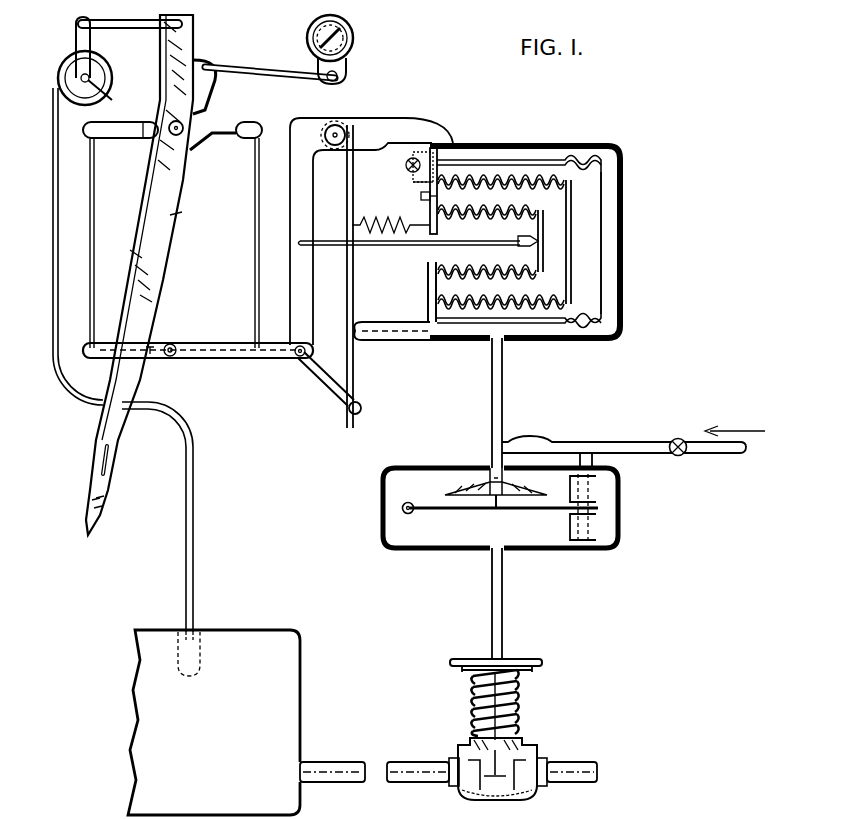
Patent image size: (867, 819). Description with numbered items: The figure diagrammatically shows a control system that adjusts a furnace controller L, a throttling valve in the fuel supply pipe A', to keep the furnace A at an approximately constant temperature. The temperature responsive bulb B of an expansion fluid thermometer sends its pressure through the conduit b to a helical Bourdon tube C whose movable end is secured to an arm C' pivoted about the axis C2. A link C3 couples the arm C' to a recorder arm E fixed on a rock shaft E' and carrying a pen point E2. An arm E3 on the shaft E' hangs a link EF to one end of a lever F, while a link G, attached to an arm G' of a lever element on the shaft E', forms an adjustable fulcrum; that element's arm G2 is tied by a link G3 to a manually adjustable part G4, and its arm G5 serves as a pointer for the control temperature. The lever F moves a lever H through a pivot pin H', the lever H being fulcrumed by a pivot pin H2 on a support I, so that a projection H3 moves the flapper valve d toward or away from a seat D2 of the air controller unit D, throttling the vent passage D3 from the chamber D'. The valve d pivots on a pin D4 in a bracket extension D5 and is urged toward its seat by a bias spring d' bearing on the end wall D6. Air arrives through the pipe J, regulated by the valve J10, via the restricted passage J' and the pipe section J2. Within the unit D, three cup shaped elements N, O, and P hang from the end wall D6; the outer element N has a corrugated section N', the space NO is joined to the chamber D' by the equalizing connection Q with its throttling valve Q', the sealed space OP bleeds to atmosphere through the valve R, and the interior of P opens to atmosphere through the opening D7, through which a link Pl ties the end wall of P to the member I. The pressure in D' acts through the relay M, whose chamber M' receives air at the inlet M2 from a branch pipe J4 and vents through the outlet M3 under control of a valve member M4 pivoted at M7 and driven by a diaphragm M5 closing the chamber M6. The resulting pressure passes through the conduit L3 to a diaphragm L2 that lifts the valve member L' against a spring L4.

The recorder arm E is at (144, 275).
The rock shaft E' is at (208, 117).
The pen point E2 is at (98, 518).
The arm E3 is at (120, 138).
The link EF is at (97, 224).
The lever F is at (155, 360).
The link G is at (246, 243).
The arm G' is at (226, 147).
The arm G2 is at (210, 80).
The link G3 is at (257, 68).
The manually adjustable part G4 is at (340, 74).
The pointer arm G5 is at (178, 216).
The pressure responsive element C is at (94, 78).
The arm C' is at (67, 47).
The axis C2 is at (109, 93).
The link C3 is at (138, 28).
The conduit b is at (193, 542).
The temperature responsive bulb B is at (193, 642).
The furnace A is at (246, 722).
The fuel supply pipe A' is at (492, 755).
The lever H is at (326, 381).
The pivot pin H' is at (198, 368).
The pivot pin H2 is at (294, 360).
The projection H3 is at (362, 408).
The support I is at (292, 316).
The flapper valve d is at (358, 276).
The bias spring d' is at (391, 216).
The control pressure regulator D is at (543, 239).
The chamber D' is at (633, 333).
The seat D2 is at (362, 323).
The vent passage D3 is at (398, 336).
The pivot pin D4 is at (337, 125).
The bracket extension D5 is at (430, 128).
The end wall D6 is at (430, 315).
The central opening D7 is at (433, 228).
The pressure equalizing connection Q is at (407, 164).
The throttling valve Q' is at (400, 180).
The throttling valve R is at (420, 197).
The link Pl is at (398, 246).
The inner cup shaped element P is at (545, 260).
The middle cup shaped element O is at (572, 276).
The chamber space OP is at (558, 230).
The outer cup shaped element N is at (541, 242).
The chamber NO is at (592, 312).
The corrugated section N' is at (606, 352).
The pipe J is at (672, 430).
The restricted flow passage J' is at (541, 436).
The pipe section J2 is at (505, 398).
The branch pipe J4 is at (594, 458).
The regulating valve J10 is at (682, 455).
The pressure relay device M is at (472, 508).
The pressure chamber M' is at (462, 555).
The inlet M2 is at (595, 485).
The outlet M3 is at (595, 532).
The valve member M4 is at (545, 512).
The diaphragm M5 is at (470, 486).
The diaphragm chamber M6 is at (492, 482).
The pivot M7 is at (408, 514).
The furnace controller L is at (507, 655).
The valve member L' is at (497, 778).
The diaphragm L2 is at (528, 672).
The conduit L3 is at (504, 626).
The spring L4 is at (515, 715).